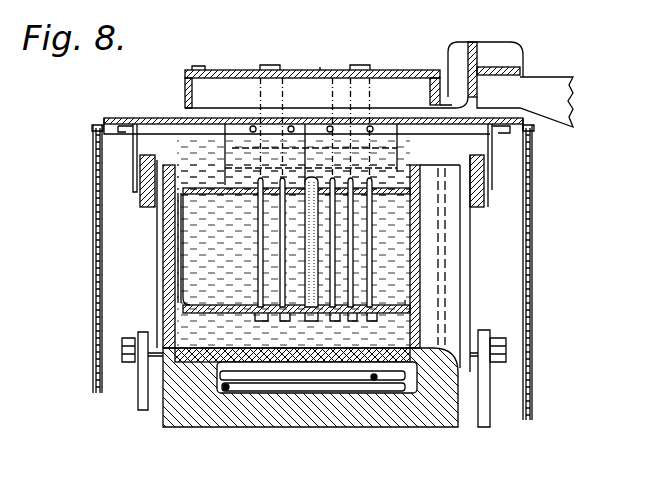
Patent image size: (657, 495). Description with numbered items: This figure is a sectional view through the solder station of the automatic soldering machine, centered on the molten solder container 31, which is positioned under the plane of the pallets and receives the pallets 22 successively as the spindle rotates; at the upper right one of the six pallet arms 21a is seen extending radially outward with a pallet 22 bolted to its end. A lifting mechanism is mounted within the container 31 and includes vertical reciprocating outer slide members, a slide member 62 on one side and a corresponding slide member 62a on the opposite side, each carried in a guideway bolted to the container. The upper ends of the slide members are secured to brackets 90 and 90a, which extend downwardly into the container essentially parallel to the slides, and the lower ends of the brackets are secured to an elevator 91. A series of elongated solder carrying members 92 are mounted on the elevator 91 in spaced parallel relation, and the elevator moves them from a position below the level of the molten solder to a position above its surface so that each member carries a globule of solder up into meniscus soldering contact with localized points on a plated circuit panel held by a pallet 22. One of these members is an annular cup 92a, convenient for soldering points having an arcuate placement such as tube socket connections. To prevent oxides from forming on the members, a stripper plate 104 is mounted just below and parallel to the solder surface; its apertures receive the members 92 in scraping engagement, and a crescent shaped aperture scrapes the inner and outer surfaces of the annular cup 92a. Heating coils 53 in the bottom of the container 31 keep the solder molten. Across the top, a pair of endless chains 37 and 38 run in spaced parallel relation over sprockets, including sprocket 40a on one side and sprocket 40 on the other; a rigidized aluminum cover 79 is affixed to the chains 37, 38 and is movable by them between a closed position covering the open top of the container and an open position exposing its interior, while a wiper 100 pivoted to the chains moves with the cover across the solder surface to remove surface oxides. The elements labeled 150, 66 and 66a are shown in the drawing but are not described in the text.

The pallet 22 is at (188, 78).
The terminal assembly 150 is at (306, 72).
The pallet arm 21a is at (546, 83).
The rigidized aluminum cover 79 is at (153, 118).
The sprocket 40a is at (91, 128).
The sprocket 40 is at (534, 130).
The wiper 100 is at (232, 150).
The bracket 90 is at (448, 170).
The bracket 90a is at (178, 228).
The stripper plate 104 is at (242, 194).
The elongated solder carrying member 92 is at (258, 238).
The annular cup 92a is at (305, 259).
The outer slide member 62a is at (157, 262).
The outer slide member 62 is at (470, 232).
The molten solder container 31 is at (218, 286).
The endless chain 37 is at (93, 308).
The endless chain 38 is at (533, 288).
The elevator 91 is at (227, 314).
The left mounting plate 66a is at (139, 386).
The right mounting plate 66 is at (484, 402).
The heating coil 53 is at (272, 392).